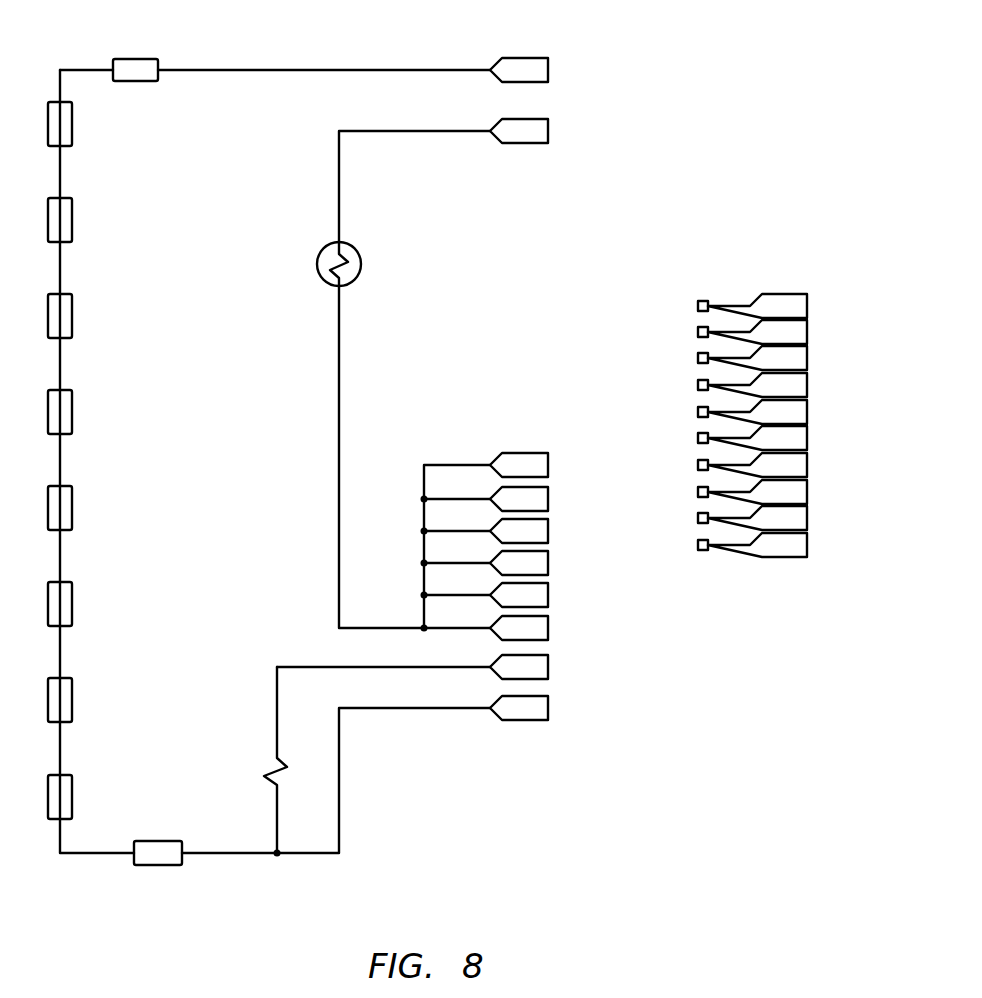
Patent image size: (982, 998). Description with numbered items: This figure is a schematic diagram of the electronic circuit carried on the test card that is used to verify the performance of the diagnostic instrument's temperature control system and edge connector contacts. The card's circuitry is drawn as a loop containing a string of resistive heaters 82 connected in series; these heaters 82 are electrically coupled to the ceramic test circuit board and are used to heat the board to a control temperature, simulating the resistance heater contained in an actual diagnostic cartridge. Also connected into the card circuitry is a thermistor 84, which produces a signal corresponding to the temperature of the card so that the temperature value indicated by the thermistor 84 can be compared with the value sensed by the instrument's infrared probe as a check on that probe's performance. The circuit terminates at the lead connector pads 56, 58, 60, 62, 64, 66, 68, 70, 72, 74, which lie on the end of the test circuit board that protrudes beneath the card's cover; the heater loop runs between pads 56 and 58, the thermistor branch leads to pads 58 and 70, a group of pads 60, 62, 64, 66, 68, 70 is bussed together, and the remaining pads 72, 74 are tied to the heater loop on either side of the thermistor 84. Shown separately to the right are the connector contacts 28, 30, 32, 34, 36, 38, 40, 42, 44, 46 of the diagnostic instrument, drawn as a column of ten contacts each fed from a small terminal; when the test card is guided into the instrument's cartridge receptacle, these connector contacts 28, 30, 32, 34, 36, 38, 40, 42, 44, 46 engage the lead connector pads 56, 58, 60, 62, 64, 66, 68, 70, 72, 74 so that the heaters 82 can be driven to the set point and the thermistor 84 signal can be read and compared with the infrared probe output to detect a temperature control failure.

The connector contact 28 is at (808, 300).
The connector contact 30 is at (808, 327).
The connector contact 32 is at (808, 354).
The connector contact 34 is at (808, 381).
The connector contact 36 is at (808, 408).
The connector contact 38 is at (808, 434).
The connector contact 40 is at (808, 461).
The connector contact 42 is at (808, 488).
The connector contact 44 is at (808, 514).
The connector contact 46 is at (808, 541).
The lead connector pad 56 is at (528, 56).
The lead connector pad 58 is at (528, 117).
The lead connector pad 60 is at (548, 465).
The lead connector pad 62 is at (548, 499).
The lead connector pad 64 is at (548, 531).
The lead connector pad 66 is at (548, 563).
The lead connector pad 68 is at (548, 595).
The lead connector pad 70 is at (548, 628).
The lead connector pad 72 is at (548, 667).
The lead connector pad 74 is at (548, 708).
The resistive heater 82 is at (73, 223).
The thermistor 84 is at (250, 768).